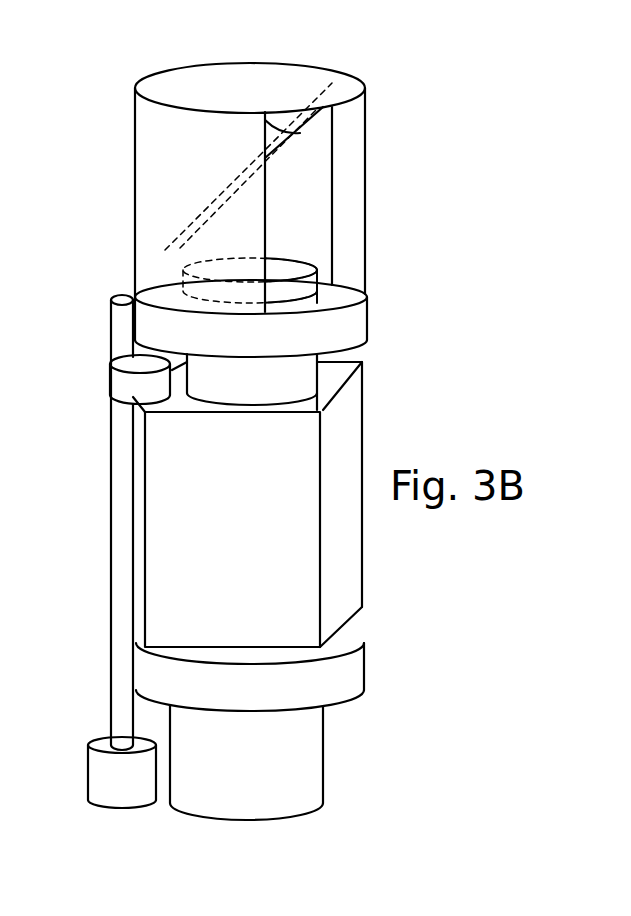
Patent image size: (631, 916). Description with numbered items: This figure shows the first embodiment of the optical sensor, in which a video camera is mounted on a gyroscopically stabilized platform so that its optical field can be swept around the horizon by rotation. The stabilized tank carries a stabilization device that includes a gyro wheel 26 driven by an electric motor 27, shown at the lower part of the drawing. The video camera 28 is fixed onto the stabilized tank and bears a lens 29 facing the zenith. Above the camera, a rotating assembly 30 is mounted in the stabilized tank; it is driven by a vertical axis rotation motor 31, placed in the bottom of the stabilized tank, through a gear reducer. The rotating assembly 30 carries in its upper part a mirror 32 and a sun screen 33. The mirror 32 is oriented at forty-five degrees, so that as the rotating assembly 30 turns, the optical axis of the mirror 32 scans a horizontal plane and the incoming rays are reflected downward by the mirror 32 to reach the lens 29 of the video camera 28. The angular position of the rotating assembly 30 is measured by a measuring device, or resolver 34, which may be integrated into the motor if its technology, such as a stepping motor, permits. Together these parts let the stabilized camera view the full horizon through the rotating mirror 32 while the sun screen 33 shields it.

The gyro wheel 26 is at (145, 663).
The electric motor 27 is at (190, 733).
The video camera 28 is at (153, 575).
The lens 29 is at (297, 385).
The rotating assembly 30 is at (157, 332).
The vertical axis rotation motor 31 is at (100, 785).
The mirror 32 is at (300, 133).
The sun screen 33 is at (147, 205).
The resolver 34 is at (110, 382).